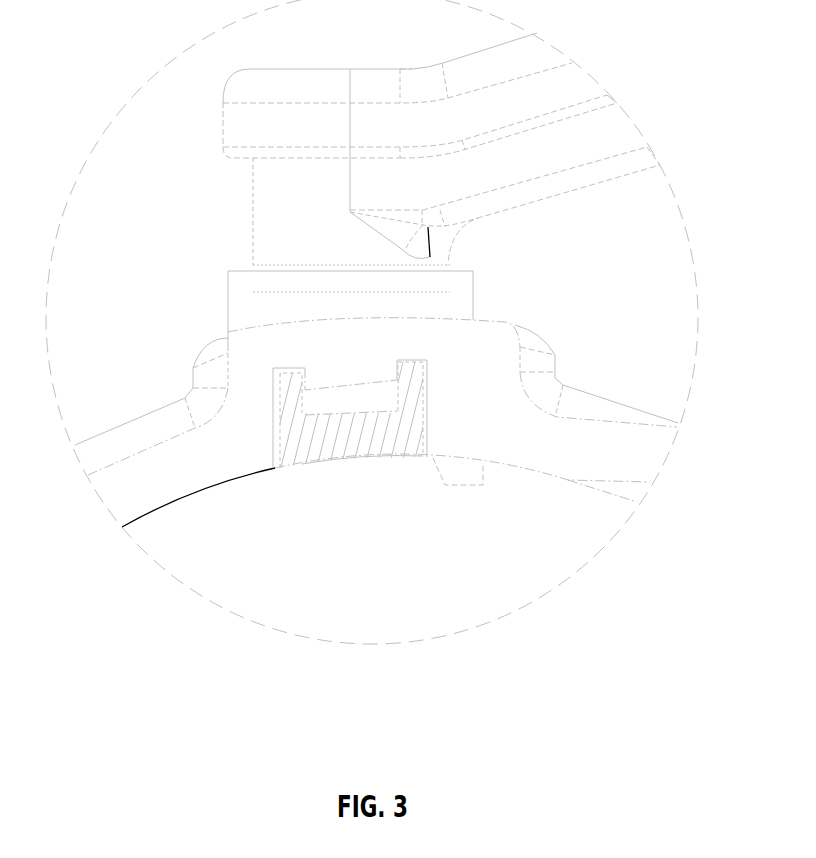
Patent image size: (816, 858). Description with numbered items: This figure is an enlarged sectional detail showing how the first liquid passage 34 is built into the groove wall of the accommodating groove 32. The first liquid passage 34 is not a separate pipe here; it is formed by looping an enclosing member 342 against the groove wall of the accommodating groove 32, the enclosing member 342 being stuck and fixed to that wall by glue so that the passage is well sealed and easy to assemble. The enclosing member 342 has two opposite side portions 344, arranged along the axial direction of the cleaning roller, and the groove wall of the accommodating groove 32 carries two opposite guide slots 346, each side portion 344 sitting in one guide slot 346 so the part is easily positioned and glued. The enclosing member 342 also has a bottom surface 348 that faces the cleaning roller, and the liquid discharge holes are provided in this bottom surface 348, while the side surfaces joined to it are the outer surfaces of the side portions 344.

The accommodating groove 32 is at (518, 437).
The first liquid passage 34 is at (323, 536).
The enclosing member 342 is at (420, 437).
The side portions 344 is at (287, 393).
The guide slots 346 is at (277, 372).
The bottom surface 348 is at (381, 455).